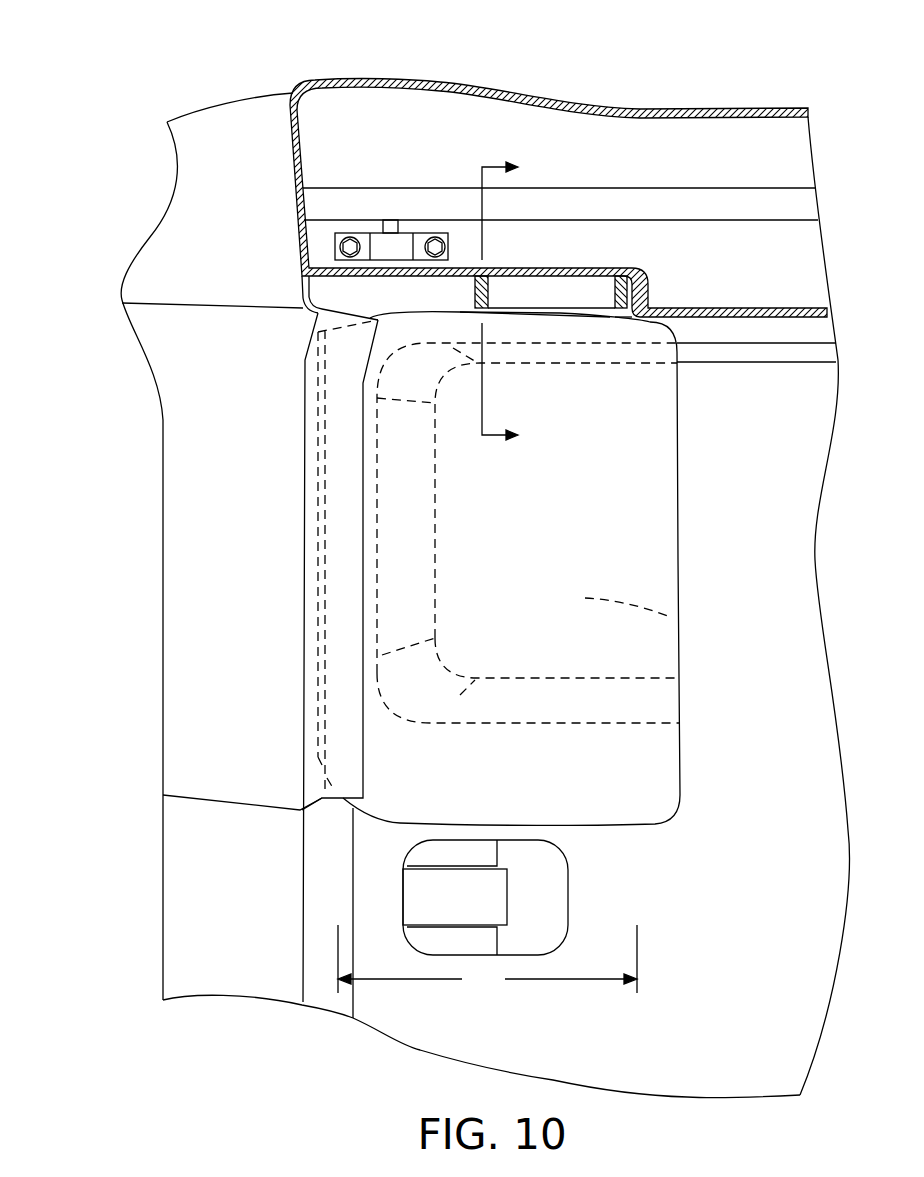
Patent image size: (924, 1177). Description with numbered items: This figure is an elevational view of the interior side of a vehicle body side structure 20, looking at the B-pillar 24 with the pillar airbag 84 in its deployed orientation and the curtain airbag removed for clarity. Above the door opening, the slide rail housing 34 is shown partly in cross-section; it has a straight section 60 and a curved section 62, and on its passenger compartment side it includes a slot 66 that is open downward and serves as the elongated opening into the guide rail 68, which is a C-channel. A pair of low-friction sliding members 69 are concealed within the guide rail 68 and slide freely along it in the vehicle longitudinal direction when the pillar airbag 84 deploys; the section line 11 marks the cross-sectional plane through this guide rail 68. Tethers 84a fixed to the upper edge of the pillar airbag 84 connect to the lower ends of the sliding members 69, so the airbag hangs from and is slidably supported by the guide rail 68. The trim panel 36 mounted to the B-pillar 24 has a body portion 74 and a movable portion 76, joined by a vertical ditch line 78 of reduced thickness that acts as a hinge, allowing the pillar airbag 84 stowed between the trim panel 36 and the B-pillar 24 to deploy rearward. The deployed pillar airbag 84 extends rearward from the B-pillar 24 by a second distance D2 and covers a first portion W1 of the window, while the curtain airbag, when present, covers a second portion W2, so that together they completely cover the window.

The body side structure 20 is at (548, 49).
The B-pillar 24 is at (160, 537).
The slide rail housing 34 is at (673, 110).
The trim panel 36 is at (118, 630).
The straight section 60 is at (787, 153).
The curved section 62 is at (390, 125).
The slot 66 is at (555, 312).
The guide rail 68 is at (550, 288).
The sliding members 69 is at (475, 290).
The body portion 74 is at (220, 640).
The movable portion 76 is at (343, 740).
The vertical ditch line 78 is at (300, 775).
The pillar airbag 84 is at (633, 477).
The tethers 84a is at (613, 313).
The section line 11- 11 is at (518, 301).
The second distance D2 is at (487, 962).
The first portion of the window W1 is at (668, 616).
The second portion of the window W2 is at (757, 550).